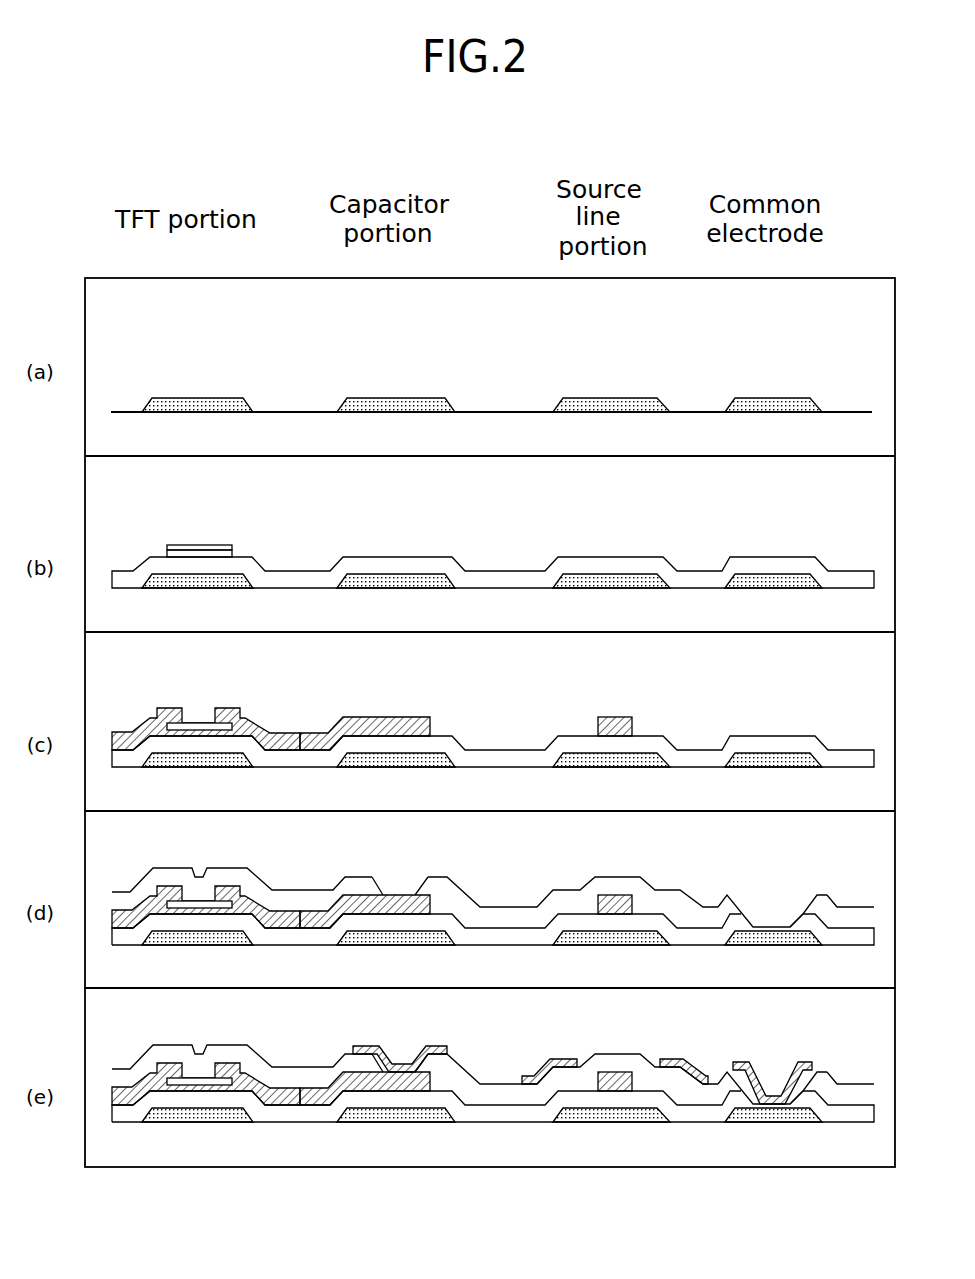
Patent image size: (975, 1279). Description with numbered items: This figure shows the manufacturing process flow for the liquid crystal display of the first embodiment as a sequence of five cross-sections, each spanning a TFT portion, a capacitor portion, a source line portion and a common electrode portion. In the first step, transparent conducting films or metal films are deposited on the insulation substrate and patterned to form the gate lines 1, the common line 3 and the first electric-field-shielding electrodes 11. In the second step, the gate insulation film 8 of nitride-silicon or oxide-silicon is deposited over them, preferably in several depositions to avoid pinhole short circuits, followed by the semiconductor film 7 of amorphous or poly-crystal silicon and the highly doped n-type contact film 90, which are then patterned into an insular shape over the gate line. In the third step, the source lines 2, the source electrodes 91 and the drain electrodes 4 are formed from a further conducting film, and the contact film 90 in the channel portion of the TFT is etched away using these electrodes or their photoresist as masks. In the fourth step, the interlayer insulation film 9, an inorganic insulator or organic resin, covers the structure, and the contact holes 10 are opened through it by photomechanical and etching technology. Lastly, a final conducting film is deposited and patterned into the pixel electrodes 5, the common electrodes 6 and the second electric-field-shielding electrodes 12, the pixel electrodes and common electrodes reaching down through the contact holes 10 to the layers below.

The gate line 1 is at (218, 400).
The common line 3 is at (408, 397).
The first electric-field-shielding electrode 11 is at (600, 397).
The gate insulation film 8 is at (593, 566).
The semiconductor film 7 is at (213, 556).
The contact film 90 is at (190, 545).
The source electrode 91 is at (150, 718).
The drain electrode 4 is at (370, 717).
The source line 2 is at (622, 716).
The interlayer insulation film 9 is at (240, 878).
The contact hole 10 is at (400, 884).
The pixel electrode 5 is at (384, 1046).
The second electric-field-shielding electrode 12 is at (670, 1060).
The common electrode 6 is at (785, 1076).